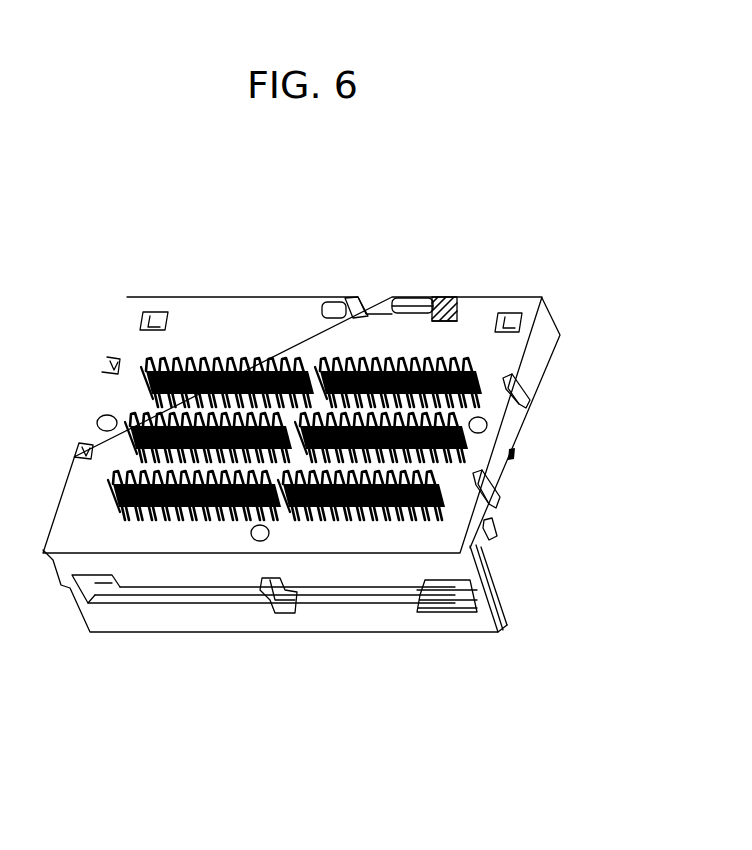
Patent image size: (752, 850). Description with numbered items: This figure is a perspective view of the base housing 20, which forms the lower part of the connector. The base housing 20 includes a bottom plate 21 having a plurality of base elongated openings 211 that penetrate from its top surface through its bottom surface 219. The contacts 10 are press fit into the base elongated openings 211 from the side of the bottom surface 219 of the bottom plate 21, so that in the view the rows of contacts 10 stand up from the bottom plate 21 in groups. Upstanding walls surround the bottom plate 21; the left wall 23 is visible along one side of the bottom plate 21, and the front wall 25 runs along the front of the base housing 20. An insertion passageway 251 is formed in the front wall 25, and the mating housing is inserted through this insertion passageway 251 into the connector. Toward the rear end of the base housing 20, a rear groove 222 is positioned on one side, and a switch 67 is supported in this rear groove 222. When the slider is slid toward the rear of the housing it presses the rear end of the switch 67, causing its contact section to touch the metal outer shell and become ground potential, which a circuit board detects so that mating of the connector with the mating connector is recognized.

The base housing 20 is at (523, 272).
The rear groove 222 is at (404, 297).
The switch 67 is at (448, 297).
The contacts 10 is at (445, 356).
The base elongated openings 211 is at (442, 478).
The left wall 23 is at (540, 362).
The bottom plate 21 is at (478, 457).
The bottom surface 219 is at (457, 525).
The front wall 25 is at (398, 617).
The insertion passageway 251 is at (360, 595).